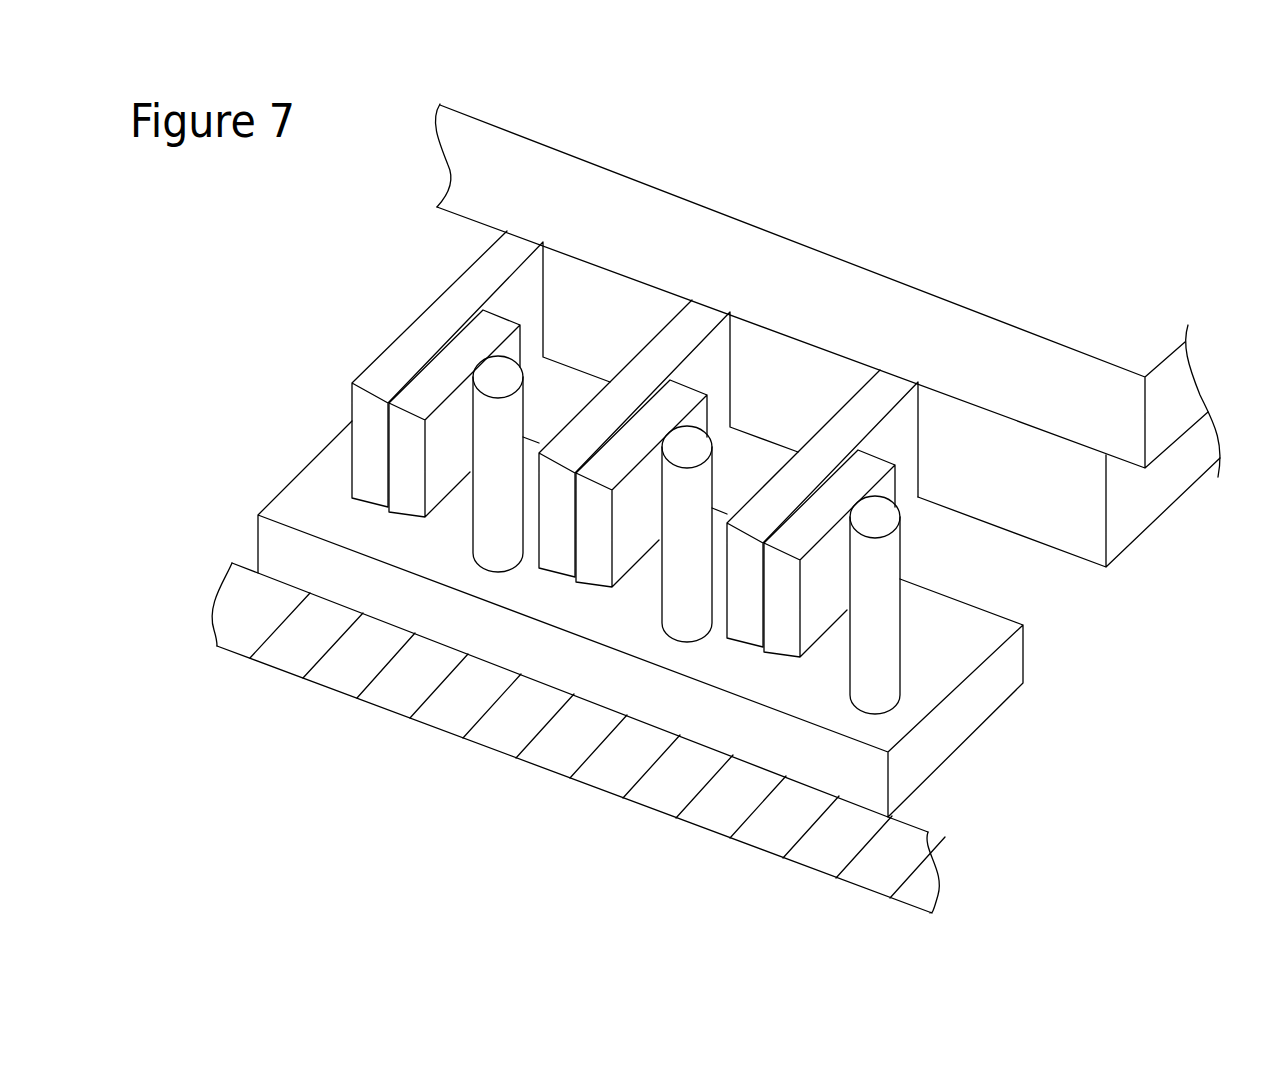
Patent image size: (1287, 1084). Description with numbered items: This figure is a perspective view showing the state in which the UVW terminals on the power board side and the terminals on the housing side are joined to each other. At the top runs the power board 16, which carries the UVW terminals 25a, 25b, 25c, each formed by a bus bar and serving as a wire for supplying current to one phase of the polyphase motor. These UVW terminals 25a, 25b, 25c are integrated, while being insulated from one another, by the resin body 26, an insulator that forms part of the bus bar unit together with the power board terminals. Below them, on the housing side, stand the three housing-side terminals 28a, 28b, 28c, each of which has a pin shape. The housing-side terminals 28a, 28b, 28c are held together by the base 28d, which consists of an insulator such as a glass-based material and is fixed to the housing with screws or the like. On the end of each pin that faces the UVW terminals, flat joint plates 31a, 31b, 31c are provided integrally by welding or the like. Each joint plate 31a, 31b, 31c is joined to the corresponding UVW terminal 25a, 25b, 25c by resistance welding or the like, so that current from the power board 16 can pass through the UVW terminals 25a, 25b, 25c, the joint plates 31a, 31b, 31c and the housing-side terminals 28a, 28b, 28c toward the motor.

The power board 16 is at (1125, 435).
The UVW terminal 25a is at (512, 248).
The UVW terminal 25b is at (700, 318).
The UVW terminal 25c is at (888, 393).
The resin body 26 is at (1045, 518).
The housing-side terminal 28a is at (493, 528).
The housing-side terminal 28b is at (685, 605).
The housing-side terminal 28c is at (863, 665).
The base 28d is at (982, 693).
The joint plate 31a is at (408, 495).
The joint plate 31b is at (590, 562).
The joint plate 31c is at (778, 633).